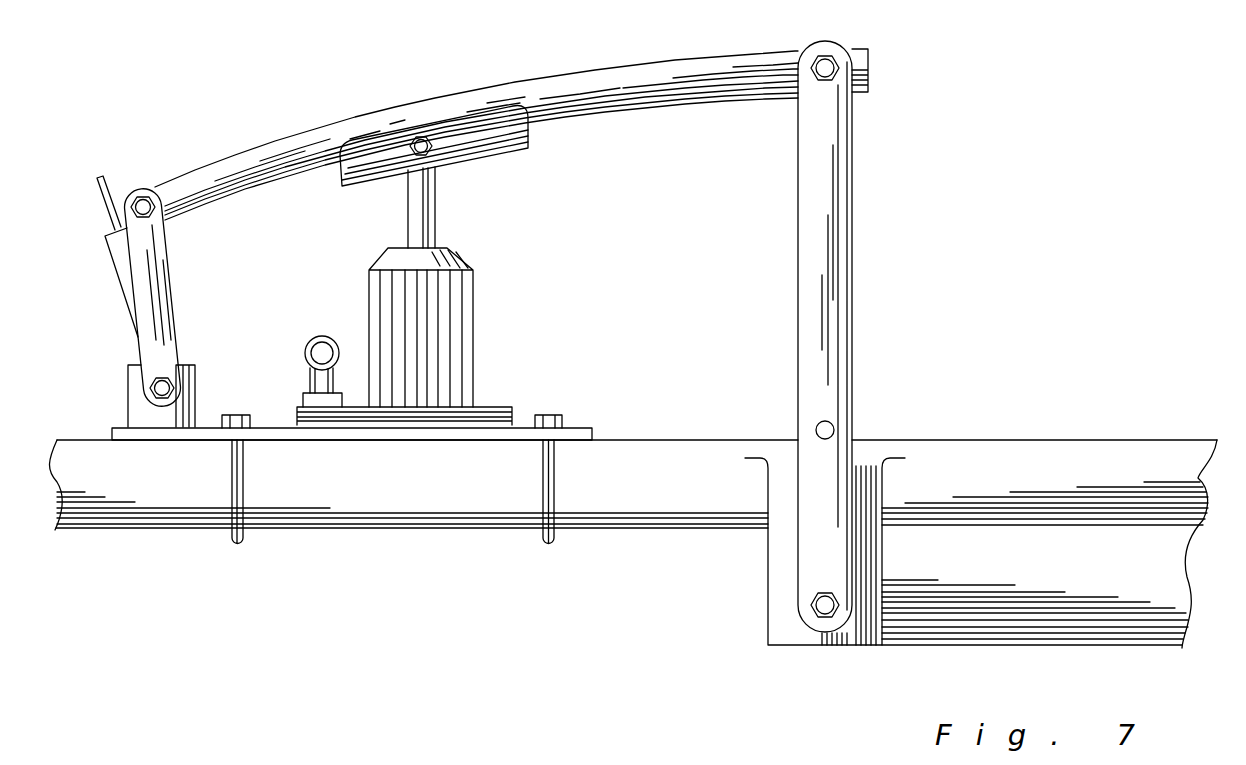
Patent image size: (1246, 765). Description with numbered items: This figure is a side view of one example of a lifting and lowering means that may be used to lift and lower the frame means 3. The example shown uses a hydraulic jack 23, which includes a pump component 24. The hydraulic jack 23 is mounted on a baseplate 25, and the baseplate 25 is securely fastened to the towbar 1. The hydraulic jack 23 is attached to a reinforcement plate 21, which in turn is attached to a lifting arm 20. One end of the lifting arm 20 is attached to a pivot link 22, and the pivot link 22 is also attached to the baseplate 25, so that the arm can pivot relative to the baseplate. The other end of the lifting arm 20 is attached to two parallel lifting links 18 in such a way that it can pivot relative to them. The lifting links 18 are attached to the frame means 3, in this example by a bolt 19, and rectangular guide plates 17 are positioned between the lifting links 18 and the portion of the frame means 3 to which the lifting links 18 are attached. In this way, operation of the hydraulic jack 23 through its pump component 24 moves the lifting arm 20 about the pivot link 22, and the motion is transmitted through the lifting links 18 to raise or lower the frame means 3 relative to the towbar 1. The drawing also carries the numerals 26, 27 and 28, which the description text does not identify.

The towbar 1 is at (1012, 460).
The frame means 3 is at (927, 623).
The rectangular guide plates 17 is at (783, 563).
The lifting links 18 is at (828, 322).
The bolt 19 is at (810, 620).
The lifting arm 20 is at (477, 100).
The reinforcement plate 21 is at (385, 143).
The pivot link 22 is at (163, 302).
The hydraulic jack 23 is at (452, 323).
The pump component 24 is at (307, 343).
The baseplate 25 is at (578, 426).
The bolts 26 is at (547, 543).
The control rod 27 is at (115, 272).
The support block 28 is at (185, 413).